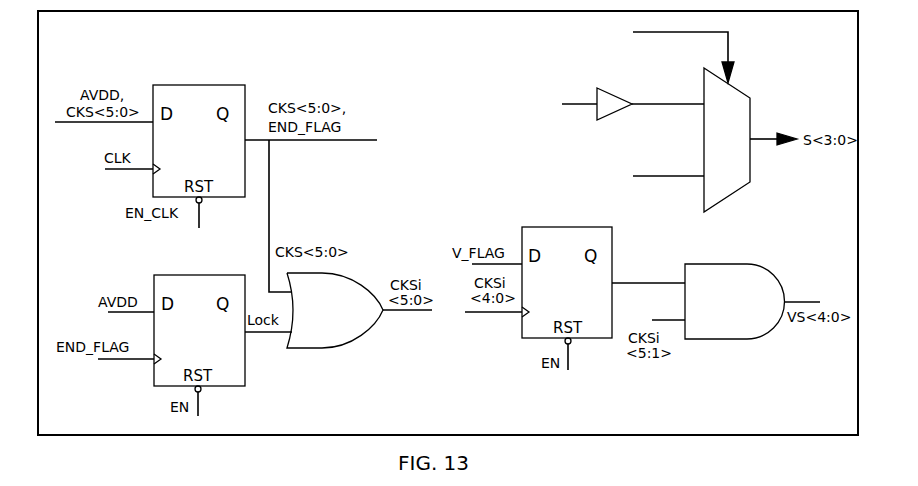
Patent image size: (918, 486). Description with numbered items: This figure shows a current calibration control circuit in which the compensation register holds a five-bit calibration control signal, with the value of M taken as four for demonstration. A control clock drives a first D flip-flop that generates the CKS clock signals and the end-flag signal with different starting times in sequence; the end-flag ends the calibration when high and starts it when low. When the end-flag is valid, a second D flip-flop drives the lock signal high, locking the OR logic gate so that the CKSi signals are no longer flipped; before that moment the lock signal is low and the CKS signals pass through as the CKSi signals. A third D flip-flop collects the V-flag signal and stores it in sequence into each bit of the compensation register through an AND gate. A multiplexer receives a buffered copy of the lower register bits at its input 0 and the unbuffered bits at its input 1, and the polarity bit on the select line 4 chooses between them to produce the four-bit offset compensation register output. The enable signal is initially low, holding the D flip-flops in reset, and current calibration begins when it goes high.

The multiplexer input 0 (buffered VS 3:0 ) 0 is at (631, 107).
The multiplexer input 1 (VS 3:0 ) 1 is at (679, 174).
The multiplexer select signal VS 4 is at (653, 53).